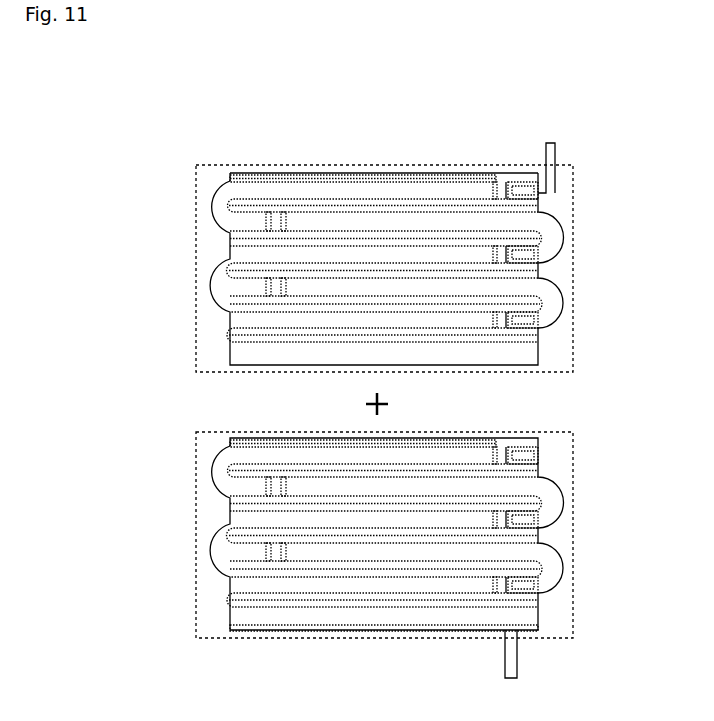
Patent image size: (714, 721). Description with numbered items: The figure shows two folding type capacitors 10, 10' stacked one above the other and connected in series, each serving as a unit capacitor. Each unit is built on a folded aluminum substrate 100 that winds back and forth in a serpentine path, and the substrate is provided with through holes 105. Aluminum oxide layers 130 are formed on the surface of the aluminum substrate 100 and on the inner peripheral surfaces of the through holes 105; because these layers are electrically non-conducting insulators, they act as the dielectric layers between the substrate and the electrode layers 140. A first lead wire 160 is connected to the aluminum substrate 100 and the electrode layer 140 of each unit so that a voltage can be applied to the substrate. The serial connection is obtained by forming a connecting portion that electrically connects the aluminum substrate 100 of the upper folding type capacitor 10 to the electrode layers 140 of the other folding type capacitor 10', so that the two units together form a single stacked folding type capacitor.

The folding type capacitor 10 is at (350, 241).
The folding type capacitor 10' is at (344, 508).
The aluminum substrate 100 is at (210, 204).
The through holes 105 is at (500, 173).
The aluminum oxide layers 130 is at (253, 176).
The electrode layers 140 is at (285, 176).
The first lead wire 160 is at (557, 167).